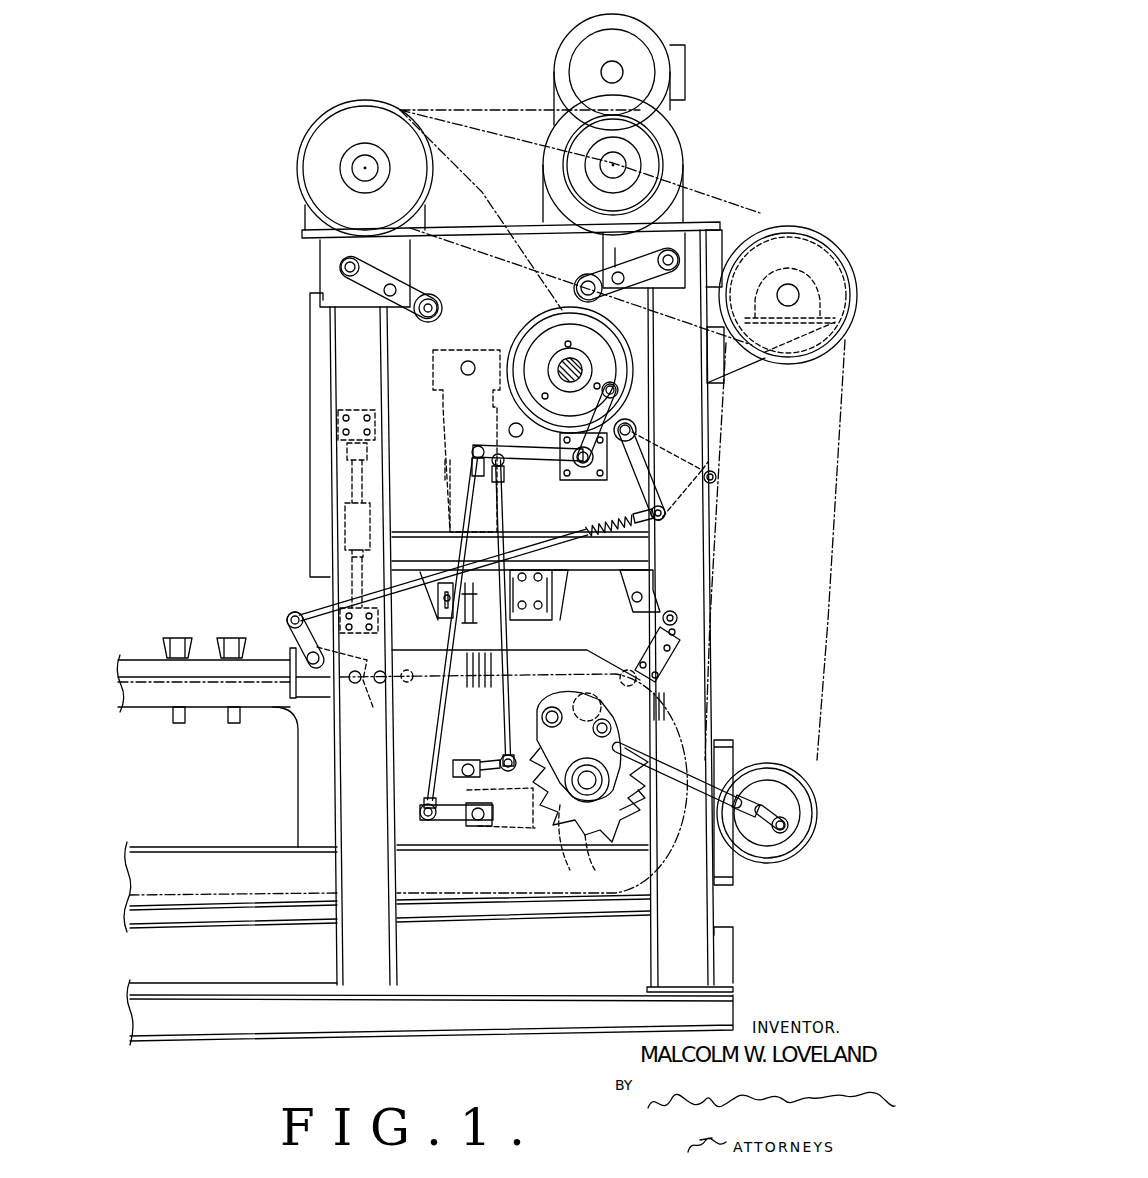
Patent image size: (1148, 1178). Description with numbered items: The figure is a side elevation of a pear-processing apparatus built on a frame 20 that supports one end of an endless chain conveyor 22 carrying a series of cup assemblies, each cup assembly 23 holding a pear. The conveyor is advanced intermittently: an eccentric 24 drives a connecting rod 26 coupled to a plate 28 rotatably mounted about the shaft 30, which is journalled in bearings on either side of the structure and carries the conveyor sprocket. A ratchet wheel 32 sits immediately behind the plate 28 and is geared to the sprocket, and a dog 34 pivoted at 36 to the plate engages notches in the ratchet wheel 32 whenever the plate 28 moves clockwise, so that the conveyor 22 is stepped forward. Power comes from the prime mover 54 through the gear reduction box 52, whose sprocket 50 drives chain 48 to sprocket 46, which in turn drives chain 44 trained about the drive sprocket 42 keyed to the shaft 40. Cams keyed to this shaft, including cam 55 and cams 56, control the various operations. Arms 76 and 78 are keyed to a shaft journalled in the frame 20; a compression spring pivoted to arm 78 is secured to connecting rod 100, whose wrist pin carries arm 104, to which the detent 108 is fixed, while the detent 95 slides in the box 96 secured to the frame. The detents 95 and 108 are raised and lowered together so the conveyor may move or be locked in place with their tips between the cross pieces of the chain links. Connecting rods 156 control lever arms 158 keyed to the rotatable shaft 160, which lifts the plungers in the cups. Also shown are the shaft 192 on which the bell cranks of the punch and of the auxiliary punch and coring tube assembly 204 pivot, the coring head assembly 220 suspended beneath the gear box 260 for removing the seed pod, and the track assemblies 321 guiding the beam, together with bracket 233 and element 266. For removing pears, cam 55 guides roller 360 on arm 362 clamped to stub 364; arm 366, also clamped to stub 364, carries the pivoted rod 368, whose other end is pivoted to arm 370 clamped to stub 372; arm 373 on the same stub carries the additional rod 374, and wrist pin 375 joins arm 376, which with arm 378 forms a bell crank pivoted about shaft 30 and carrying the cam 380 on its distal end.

The frame 20 is at (710, 548).
The endless chain conveyor 22 is at (165, 690).
The cup assembly 23 is at (230, 637).
The eccentric 24 is at (765, 770).
The connecting rod 26 is at (722, 750).
The plate 28 is at (587, 750).
The shaft 30 is at (615, 840).
The ratchet wheel 32 is at (643, 800).
The dog 34 is at (583, 700).
The pivot 36 is at (548, 710).
The shaft 40 is at (560, 365).
The drive sprocket 42 is at (605, 318).
The chain 44 is at (477, 190).
The sprocket 46 is at (369, 136).
The chain 48 is at (470, 110).
The sprocket 50 is at (645, 145).
The gear reduction box 52 is at (680, 175).
The prime mover 54 is at (645, 70).
The cam 55 is at (605, 360).
The cams 56 is at (548, 316).
The arm 76 is at (660, 448).
The arm 78 is at (650, 490).
The detent 95 is at (633, 663).
The box 96 is at (668, 660).
The connecting rod 100 is at (562, 538).
The arm 104 is at (290, 620).
The detent 108 is at (372, 695).
The connecting rod 156 is at (445, 712).
The lever arm 158 is at (440, 822).
The rotatable shaft 160 is at (478, 826).
The shaft 192 is at (509, 425).
The auxiliary punch and coring tube assembly 204 is at (340, 530).
The coring head assembly 220 is at (440, 448).
The bracket 233 is at (440, 618).
The gear box 260 is at (433, 380).
The hole 266 is at (462, 365).
The track assemblies 321 is at (555, 612).
The roller 360 is at (618, 388).
The arm 362 is at (613, 410).
The stub 364 is at (587, 468).
The arm 366 is at (535, 463).
The rod 368 is at (503, 518).
The arm 370 is at (505, 725).
The stub 372 is at (468, 762).
The arm 373 is at (478, 790).
The rod 374 is at (533, 820).
The wrist pin 375 is at (575, 838).
The arm 376 is at (585, 850).
The arm 378 is at (612, 725).
The cam 380 is at (660, 728).